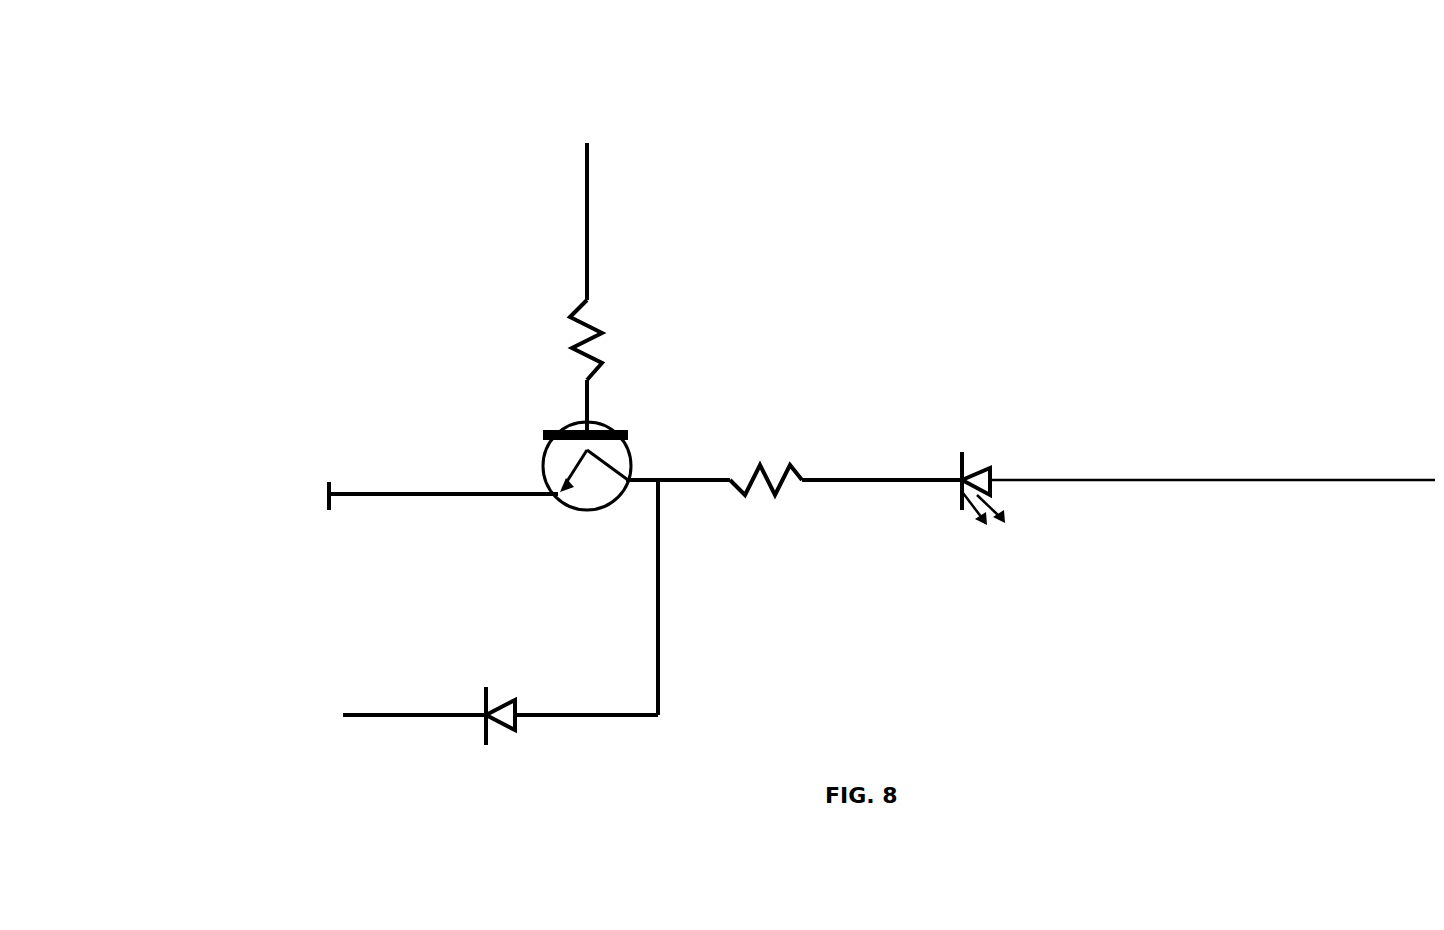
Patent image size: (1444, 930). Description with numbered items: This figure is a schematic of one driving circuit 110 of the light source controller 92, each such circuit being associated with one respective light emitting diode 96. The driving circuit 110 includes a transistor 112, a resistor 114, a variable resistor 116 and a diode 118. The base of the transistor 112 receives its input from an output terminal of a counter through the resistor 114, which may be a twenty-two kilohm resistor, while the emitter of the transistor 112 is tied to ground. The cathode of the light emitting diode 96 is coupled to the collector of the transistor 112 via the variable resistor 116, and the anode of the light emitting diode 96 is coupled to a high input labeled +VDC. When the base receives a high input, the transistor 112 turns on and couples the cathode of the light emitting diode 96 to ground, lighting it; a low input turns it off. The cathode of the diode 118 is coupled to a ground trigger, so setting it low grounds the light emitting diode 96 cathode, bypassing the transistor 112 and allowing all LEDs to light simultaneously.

The light source controller 92 is at (1204, 94).
The driving circuit 110 is at (1030, 234).
The resistor 114 is at (603, 317).
The transistor 112 is at (632, 432).
The variable resistor 116 is at (798, 467).
The light emitting diode 96 is at (988, 466).
The diode 118 is at (517, 699).